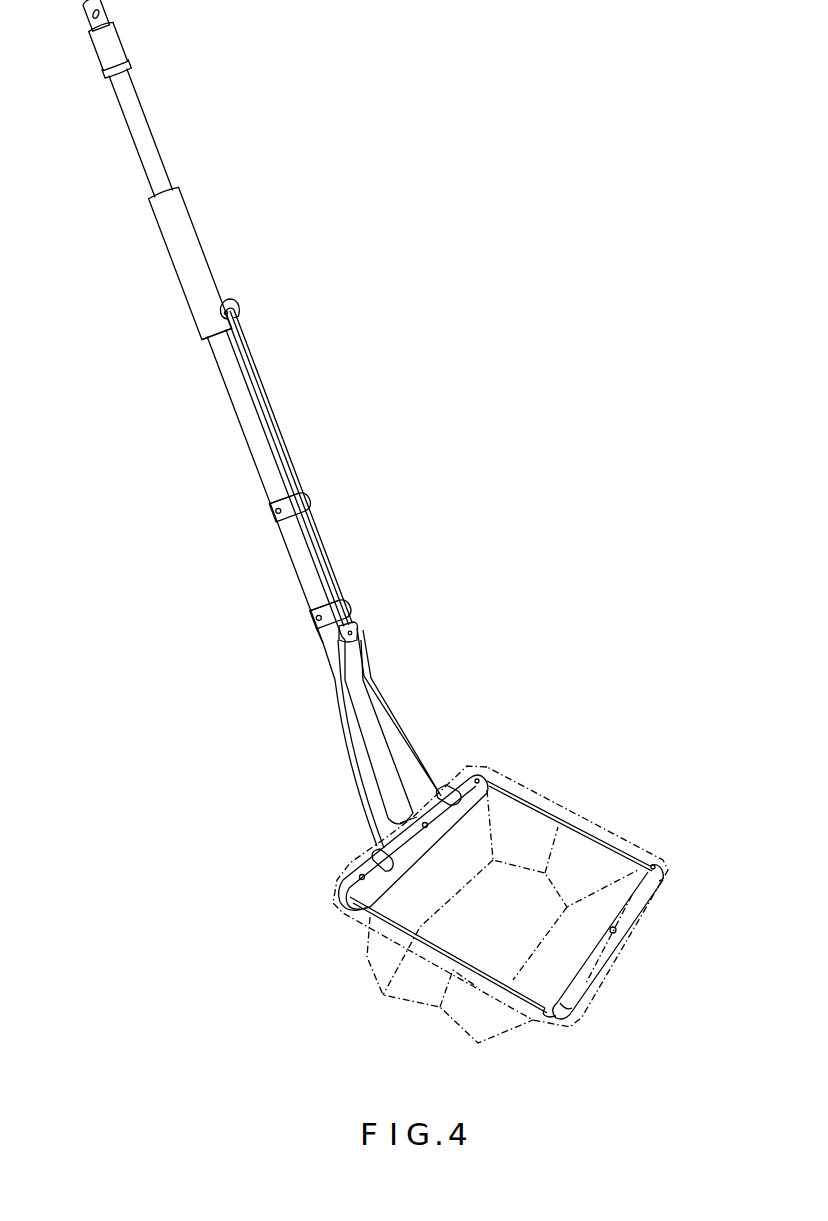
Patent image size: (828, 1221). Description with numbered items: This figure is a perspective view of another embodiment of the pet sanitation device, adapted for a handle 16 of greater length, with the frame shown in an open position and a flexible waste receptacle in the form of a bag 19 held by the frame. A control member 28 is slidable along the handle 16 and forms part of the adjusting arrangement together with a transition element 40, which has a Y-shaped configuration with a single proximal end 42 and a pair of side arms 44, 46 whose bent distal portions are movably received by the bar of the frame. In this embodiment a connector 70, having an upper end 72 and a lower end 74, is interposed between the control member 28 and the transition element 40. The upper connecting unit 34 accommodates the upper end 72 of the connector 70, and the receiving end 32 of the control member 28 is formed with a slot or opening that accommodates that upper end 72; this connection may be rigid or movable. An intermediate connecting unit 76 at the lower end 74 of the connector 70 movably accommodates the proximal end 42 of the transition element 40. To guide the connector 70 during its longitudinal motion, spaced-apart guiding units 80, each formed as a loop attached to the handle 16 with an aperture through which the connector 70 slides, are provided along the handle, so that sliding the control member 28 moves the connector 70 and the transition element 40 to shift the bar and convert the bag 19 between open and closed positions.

The handle 16 is at (147, 140).
The control member 28 is at (193, 240).
The upper connecting unit 34 is at (232, 299).
The upper end of the connector 72 is at (236, 331).
The connecting end of the control member 32 is at (209, 324).
The connector 70 is at (333, 552).
The guiding unit 80 is at (306, 510).
The lower end of the connector 74 is at (347, 615).
The intermediate connecting unit 76 is at (360, 638).
The proximal end of the transition element 42 is at (337, 628).
The side arm 46 is at (383, 677).
The side arm 44 is at (357, 688).
The transition element 40 is at (408, 705).
The bag 19 is at (487, 1023).